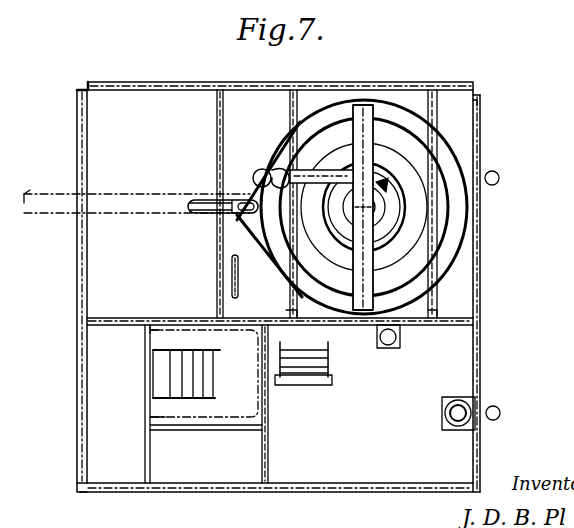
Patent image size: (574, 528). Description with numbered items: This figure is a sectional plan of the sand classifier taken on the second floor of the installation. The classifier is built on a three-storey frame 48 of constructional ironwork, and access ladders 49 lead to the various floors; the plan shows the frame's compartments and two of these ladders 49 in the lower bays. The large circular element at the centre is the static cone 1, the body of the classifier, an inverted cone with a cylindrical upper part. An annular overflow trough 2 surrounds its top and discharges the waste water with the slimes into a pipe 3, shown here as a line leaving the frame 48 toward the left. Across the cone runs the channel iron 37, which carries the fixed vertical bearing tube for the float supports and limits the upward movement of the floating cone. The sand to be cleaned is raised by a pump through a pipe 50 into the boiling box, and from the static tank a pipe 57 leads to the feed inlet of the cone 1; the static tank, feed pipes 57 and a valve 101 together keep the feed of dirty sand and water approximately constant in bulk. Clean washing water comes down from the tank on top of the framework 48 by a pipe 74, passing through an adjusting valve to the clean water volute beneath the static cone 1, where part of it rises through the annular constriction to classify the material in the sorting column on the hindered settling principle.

The static cone 1 is at (410, 267).
The annular overflow trough 2 is at (268, 250).
The pipe 3 is at (66, 211).
The channel iron 37 is at (373, 140).
The frame 48 is at (480, 97).
The access ladders 49 is at (207, 378).
The pipe 50 is at (499, 178).
The pipe 57 is at (318, 172).
The pipe 74 is at (447, 413).
The valve 101 is at (272, 165).